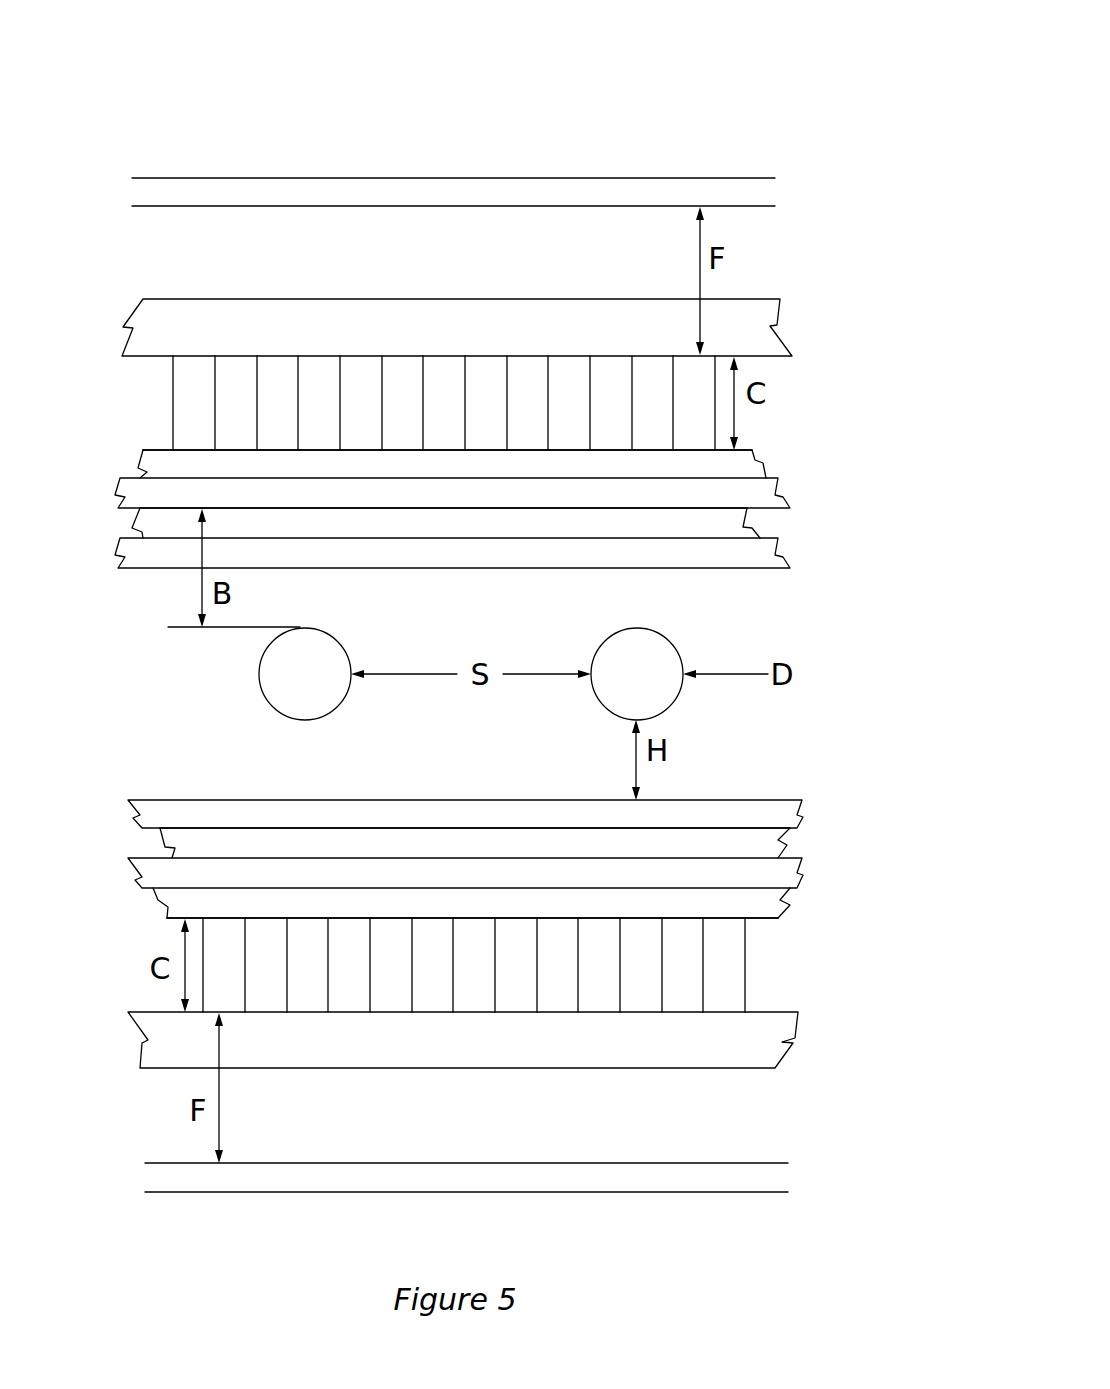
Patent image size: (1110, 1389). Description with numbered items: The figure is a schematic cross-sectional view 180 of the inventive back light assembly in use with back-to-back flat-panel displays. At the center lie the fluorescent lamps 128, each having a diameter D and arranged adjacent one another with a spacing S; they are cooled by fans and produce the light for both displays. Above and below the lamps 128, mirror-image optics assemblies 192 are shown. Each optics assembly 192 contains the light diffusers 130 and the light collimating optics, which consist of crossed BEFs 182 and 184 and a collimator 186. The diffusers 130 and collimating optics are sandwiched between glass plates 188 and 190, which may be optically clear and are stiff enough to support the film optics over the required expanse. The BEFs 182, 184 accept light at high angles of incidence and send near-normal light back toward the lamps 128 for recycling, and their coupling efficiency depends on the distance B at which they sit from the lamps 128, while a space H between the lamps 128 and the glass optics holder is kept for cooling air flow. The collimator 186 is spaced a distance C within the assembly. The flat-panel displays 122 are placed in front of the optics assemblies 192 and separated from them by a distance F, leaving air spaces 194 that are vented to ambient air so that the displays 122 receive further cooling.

The flat-panel displays 122 is at (488, 190).
The fluorescent lamps 128 is at (673, 645).
The light diffusers 130 is at (747, 518).
The cross-sectional view 180 is at (790, 120).
The BEF 182 is at (380, 493).
The BEF 184 is at (490, 465).
The collimator 186 is at (290, 410).
The glass plate 188 is at (163, 568).
The glass plate 190 is at (182, 298).
The optics assemblies 192 is at (458, 683).
The air spaces 194 is at (500, 268).